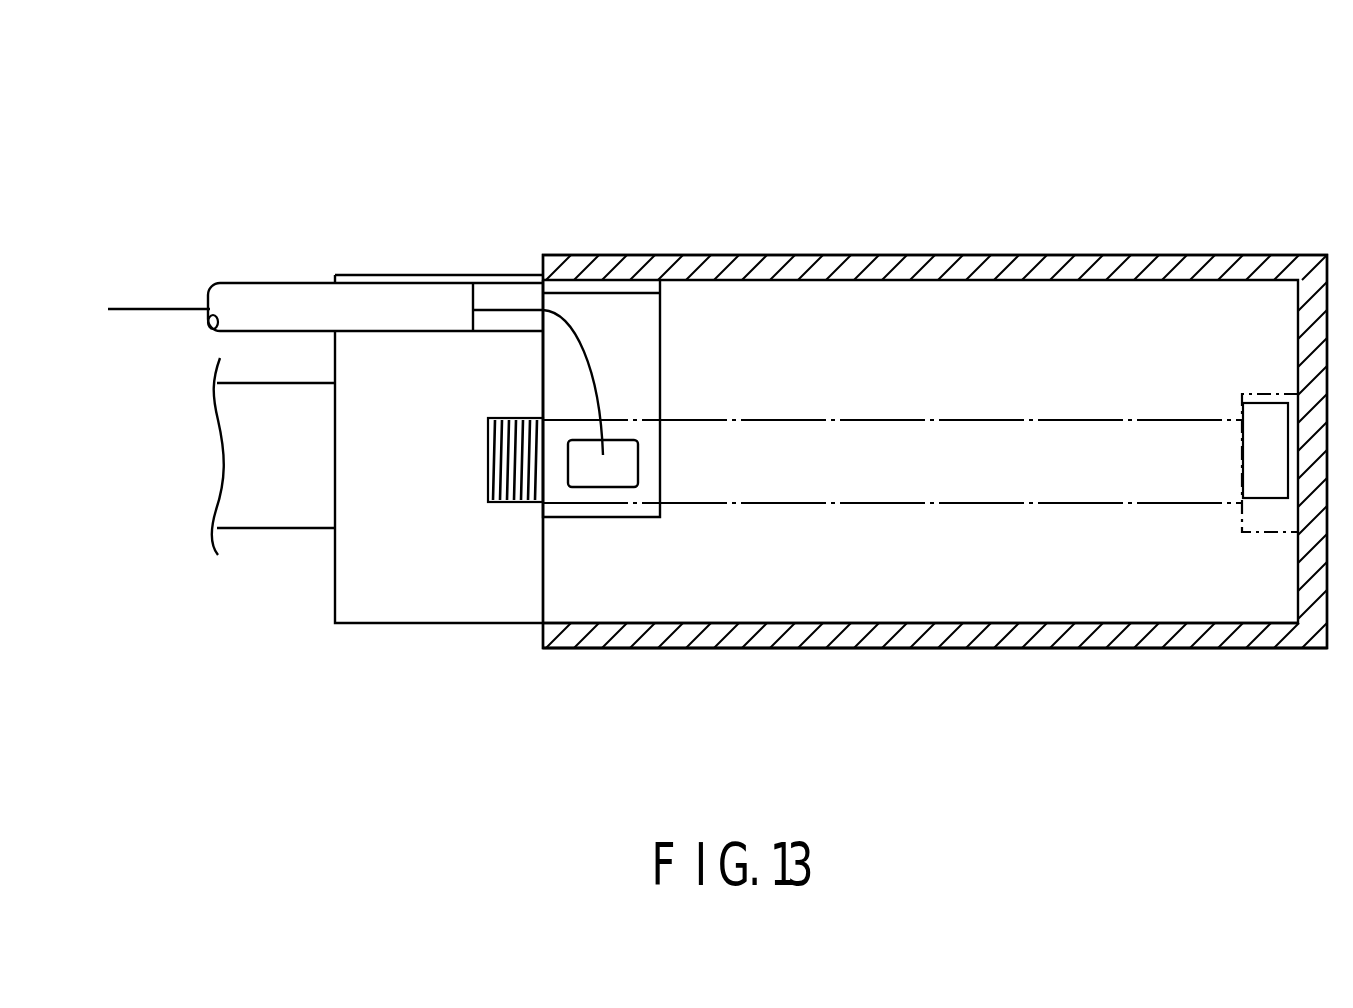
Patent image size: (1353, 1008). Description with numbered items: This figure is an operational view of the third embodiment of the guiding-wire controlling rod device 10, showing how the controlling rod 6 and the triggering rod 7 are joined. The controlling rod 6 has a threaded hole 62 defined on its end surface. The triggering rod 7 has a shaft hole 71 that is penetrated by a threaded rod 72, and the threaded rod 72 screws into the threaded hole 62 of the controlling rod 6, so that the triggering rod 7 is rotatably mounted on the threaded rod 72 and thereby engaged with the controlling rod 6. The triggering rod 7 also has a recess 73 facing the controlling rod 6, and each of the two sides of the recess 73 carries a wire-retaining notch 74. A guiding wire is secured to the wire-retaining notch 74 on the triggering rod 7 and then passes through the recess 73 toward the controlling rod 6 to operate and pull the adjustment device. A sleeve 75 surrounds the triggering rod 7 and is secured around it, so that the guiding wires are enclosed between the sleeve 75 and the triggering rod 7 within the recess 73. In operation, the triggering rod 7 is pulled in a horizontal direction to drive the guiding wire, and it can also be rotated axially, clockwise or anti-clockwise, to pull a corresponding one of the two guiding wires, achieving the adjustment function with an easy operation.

The guiding-wire controlling rod device 10 is at (850, 163).
The triggering rod 7 is at (1115, 237).
The recess 73 is at (605, 293).
The wire-retaining notch 74 is at (638, 464).
The shaft hole 71 is at (910, 420).
The threaded rod 72 is at (1041, 490).
The controlling rod 6 is at (377, 615).
The threaded hole 62 is at (498, 503).
The sleeve 75 is at (1225, 648).